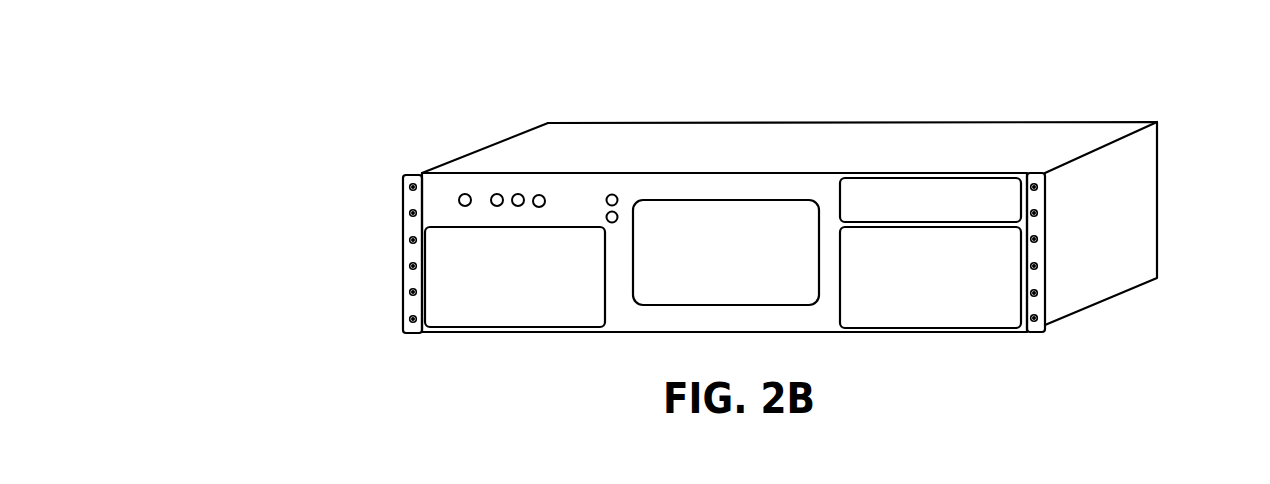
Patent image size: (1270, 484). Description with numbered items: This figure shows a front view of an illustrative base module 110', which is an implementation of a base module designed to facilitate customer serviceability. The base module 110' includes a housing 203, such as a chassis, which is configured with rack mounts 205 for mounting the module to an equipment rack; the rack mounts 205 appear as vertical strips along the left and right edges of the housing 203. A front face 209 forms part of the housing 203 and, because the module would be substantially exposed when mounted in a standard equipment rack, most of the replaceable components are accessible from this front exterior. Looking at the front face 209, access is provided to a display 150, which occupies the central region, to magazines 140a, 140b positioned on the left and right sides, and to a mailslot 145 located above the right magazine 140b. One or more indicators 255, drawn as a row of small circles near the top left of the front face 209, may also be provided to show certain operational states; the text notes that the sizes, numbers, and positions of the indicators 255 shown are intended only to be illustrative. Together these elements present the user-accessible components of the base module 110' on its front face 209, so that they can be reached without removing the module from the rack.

The base module 110' is at (739, 181).
The housing 203 is at (513, 133).
The rack mounts 205 is at (403, 226).
The front face 209 is at (968, 156).
The indicators 255 is at (705, 155).
The display 150 is at (740, 276).
The magazine 140a is at (537, 300).
The magazine 140b is at (953, 300).
The mailslot 145 is at (993, 211).